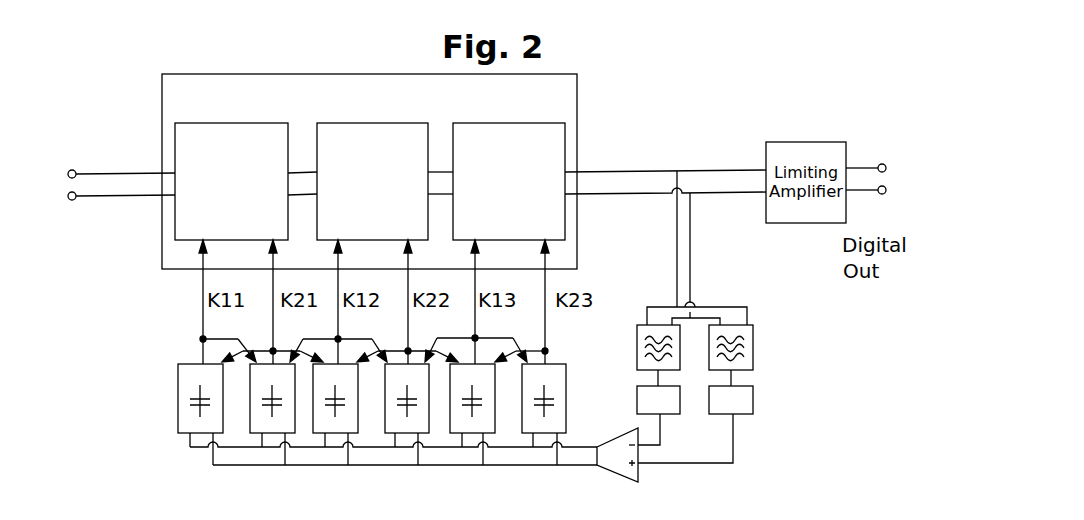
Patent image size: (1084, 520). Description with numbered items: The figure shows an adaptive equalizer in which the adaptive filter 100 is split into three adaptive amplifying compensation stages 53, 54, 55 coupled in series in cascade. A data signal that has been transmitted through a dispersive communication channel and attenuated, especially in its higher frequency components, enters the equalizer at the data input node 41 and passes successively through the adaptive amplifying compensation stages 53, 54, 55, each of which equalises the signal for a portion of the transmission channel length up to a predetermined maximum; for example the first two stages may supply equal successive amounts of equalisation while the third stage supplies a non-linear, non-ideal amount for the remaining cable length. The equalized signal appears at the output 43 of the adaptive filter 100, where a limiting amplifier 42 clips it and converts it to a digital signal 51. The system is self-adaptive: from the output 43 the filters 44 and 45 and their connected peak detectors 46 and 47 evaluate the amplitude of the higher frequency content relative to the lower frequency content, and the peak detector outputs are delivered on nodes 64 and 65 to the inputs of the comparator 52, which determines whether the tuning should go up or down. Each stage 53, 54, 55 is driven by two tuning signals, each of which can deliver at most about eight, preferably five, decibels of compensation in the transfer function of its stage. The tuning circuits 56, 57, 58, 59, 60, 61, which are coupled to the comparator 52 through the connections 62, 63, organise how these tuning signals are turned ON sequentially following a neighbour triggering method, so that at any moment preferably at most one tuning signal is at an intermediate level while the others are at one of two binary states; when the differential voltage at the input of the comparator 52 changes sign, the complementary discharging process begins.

The data input node 41 is at (56, 168).
The limiting amplifier 42 is at (848, 158).
The output of the adaptive filter 43 is at (632, 171).
The filter 44 is at (755, 347).
The filter 45 is at (635, 338).
The peak detector 46 is at (755, 402).
The peak detector 47 is at (635, 393).
The digital signal 51 is at (866, 204).
The comparator 52 is at (617, 477).
The adaptive amplifying compensation stage 53 is at (200, 123).
The adaptive amplifying compensation stage 54 is at (360, 123).
The adaptive amplifying compensation stage 55 is at (490, 123).
The tuning circuit 56 is at (178, 398).
The tuning circuit 57 is at (250, 398).
The tuning circuit 58 is at (313, 398).
The tuning circuit 59 is at (385, 398).
The tuning circuit 60 is at (450, 398).
The tuning circuit 61 is at (522, 398).
The control bus line 62 is at (193, 445).
The control bus line 63 is at (212, 466).
The node 64 is at (660, 423).
The node 65 is at (733, 438).
The adaptive filter 100 is at (577, 132).